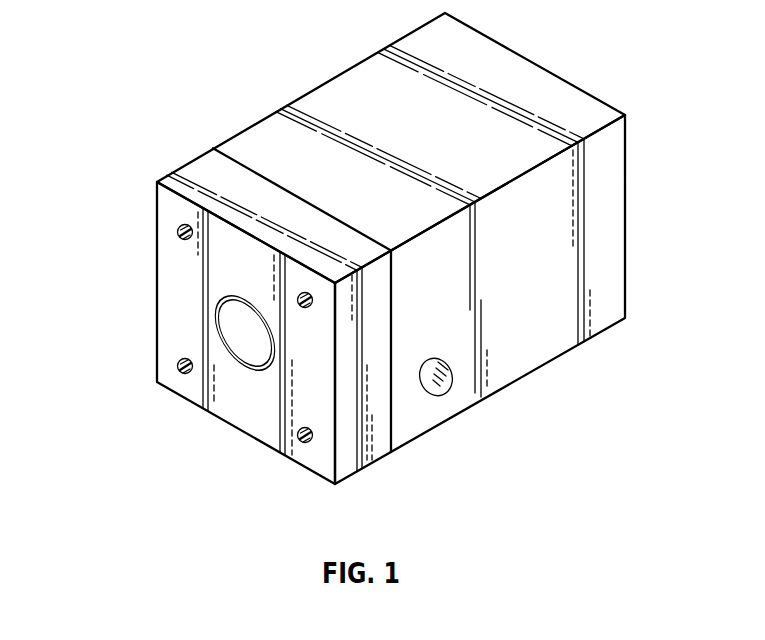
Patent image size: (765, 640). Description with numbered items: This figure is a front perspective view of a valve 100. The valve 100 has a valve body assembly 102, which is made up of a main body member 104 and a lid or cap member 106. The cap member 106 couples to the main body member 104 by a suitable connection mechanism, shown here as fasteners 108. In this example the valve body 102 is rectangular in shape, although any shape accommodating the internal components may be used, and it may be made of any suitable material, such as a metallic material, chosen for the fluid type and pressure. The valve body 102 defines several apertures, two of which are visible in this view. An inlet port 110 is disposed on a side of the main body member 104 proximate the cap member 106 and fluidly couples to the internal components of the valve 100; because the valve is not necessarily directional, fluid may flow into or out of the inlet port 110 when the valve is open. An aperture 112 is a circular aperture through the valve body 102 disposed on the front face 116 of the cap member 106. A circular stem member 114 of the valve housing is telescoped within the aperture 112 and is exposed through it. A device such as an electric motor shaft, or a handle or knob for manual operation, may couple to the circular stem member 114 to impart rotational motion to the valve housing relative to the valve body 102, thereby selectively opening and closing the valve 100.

The valve 100 is at (342, 251).
The valve body assembly 102 is at (294, 85).
The main body member 104 is at (444, 133).
The cap member 106 is at (197, 177).
The fasteners 108 is at (180, 234).
The inlet port 110 is at (451, 381).
The aperture 112 is at (242, 370).
The circular stem member 114 is at (240, 338).
The front face 116 is at (282, 437).